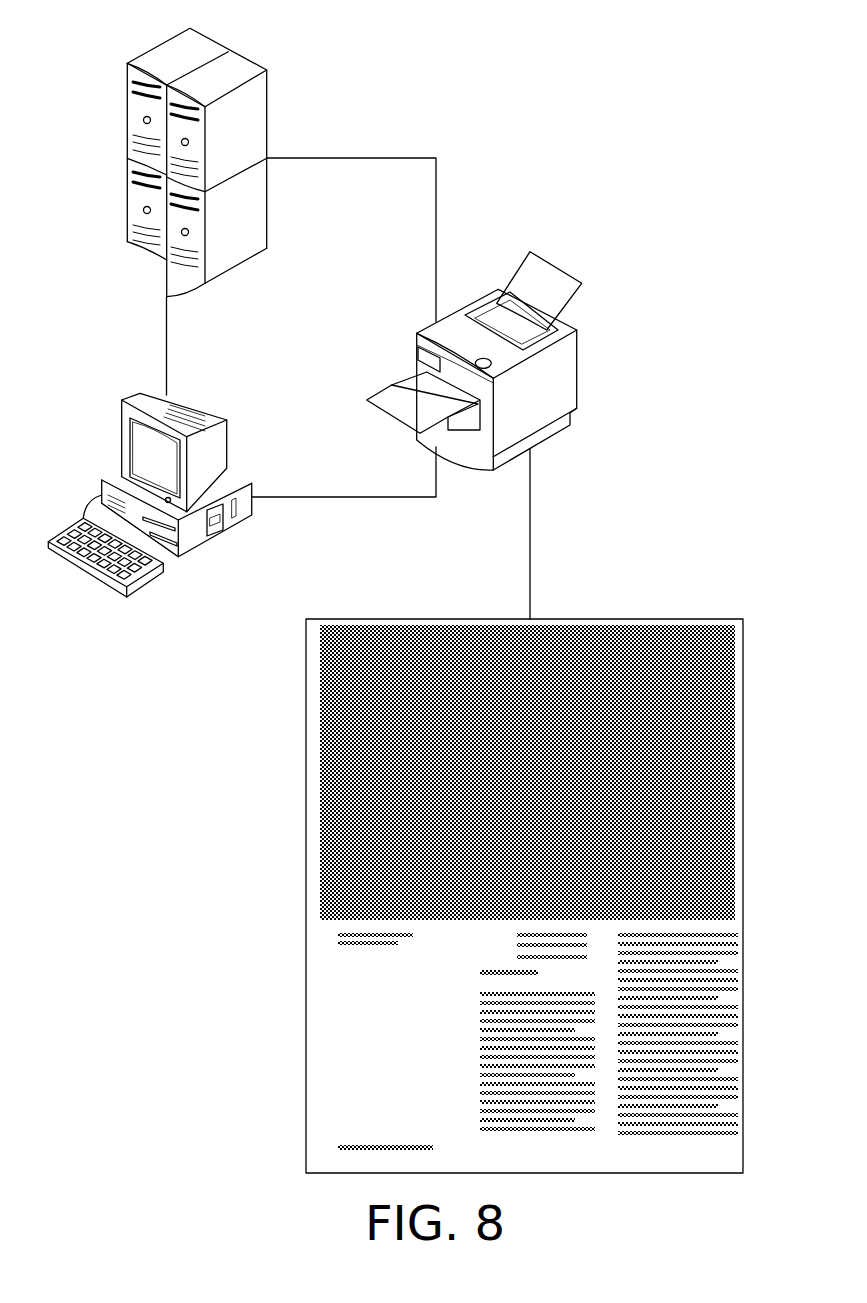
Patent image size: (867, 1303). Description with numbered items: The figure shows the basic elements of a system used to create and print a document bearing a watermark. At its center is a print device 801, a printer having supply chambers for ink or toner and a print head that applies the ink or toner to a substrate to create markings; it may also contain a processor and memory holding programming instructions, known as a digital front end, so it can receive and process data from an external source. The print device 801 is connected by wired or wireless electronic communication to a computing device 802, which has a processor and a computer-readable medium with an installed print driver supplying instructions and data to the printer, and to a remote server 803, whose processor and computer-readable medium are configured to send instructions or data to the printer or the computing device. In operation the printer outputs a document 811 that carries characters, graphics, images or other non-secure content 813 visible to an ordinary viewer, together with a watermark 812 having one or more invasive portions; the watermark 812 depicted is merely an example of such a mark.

The print device 801 is at (577, 368).
The computing device 802 is at (215, 537).
The remote server 803 is at (267, 95).
The document 811 is at (585, 618).
The watermark 812 is at (678, 643).
The non-secure content 813 is at (318, 798).